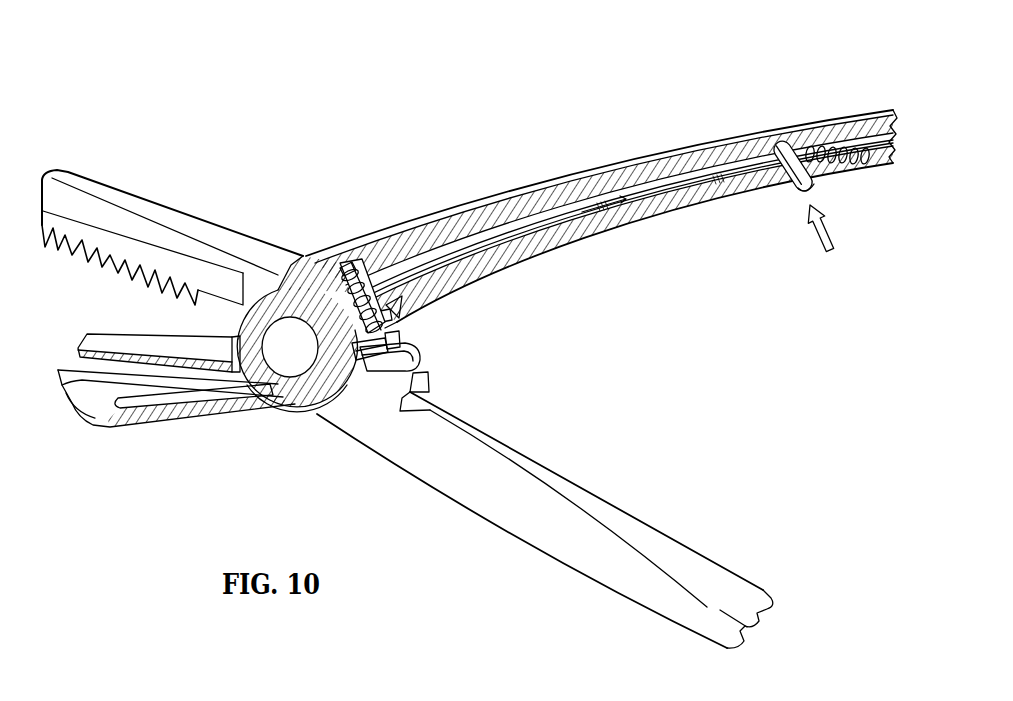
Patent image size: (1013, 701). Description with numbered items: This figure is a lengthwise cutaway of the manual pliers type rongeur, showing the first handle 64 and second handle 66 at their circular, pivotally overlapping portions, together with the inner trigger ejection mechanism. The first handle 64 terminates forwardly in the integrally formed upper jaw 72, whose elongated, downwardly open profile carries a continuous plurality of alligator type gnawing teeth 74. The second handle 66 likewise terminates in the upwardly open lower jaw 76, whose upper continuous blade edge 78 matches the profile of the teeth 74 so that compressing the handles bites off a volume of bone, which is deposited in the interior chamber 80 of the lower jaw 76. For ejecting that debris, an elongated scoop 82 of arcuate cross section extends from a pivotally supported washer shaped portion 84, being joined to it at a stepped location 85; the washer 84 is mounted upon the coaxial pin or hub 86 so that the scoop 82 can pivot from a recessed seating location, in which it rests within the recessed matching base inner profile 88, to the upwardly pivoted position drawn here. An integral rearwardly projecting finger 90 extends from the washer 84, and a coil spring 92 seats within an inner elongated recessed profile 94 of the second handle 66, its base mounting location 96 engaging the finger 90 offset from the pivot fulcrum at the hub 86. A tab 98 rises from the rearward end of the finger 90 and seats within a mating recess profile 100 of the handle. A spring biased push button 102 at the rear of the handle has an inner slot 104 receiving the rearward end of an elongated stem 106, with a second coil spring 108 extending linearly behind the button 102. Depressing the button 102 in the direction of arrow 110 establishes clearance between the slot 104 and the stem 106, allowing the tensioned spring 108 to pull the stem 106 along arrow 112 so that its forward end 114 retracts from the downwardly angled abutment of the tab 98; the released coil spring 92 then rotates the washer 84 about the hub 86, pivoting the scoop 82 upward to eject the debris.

The first handle 64 is at (550, 545).
The second handle 66 is at (513, 197).
The upper jaw 72 is at (150, 207).
The gnawing teeth 74 is at (73, 254).
The lower jaw 76 is at (106, 428).
The blade edge 78 is at (75, 372).
The interior chamber 80 is at (75, 402).
The elongated scoop 82 is at (118, 336).
The washer shaped portion 84 is at (300, 408).
The stepped location 85 is at (230, 342).
The coaxial pin or hub 86 is at (290, 368).
The recessed base inner profile 88 is at (178, 404).
The rearwardly projecting finger 90 is at (427, 357).
The coil spring 92 is at (350, 280).
The inner elongated recessed profile 94 is at (370, 312).
The base mounting location 96 is at (360, 367).
The tab 98 is at (405, 340).
The mating recess profile 100 is at (378, 316).
The push button 102 is at (798, 188).
The inner slot 104 is at (797, 140).
The elongated stem 106 is at (735, 163).
The second coil spring 108 is at (843, 145).
The arrow 110 is at (833, 222).
The arrow 112 is at (588, 207).
The forward end of stem 114 is at (390, 316).